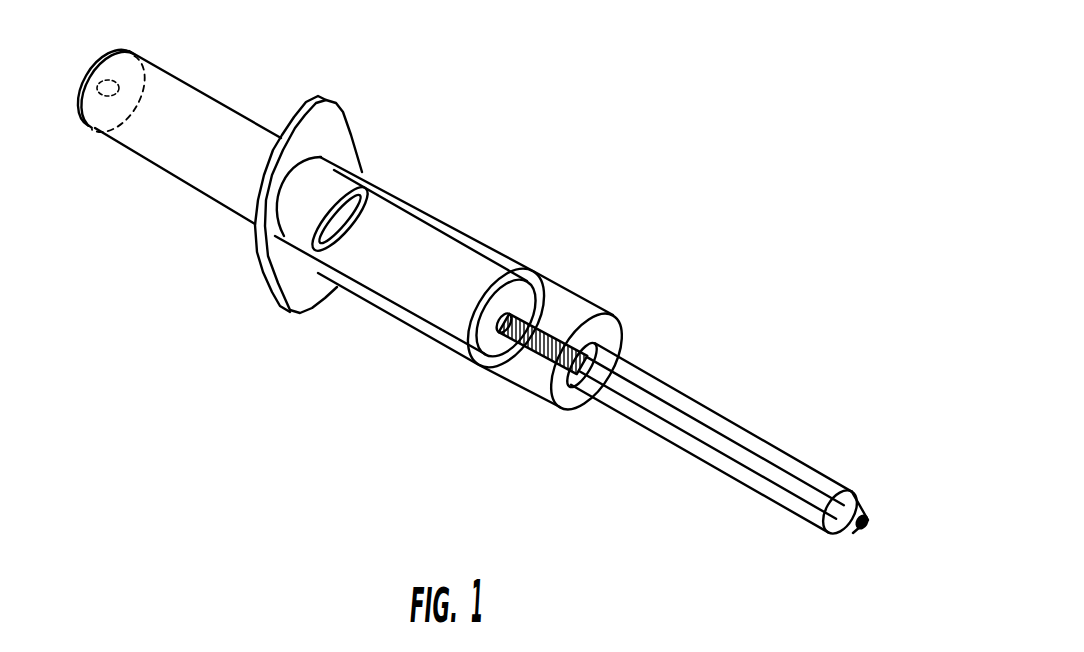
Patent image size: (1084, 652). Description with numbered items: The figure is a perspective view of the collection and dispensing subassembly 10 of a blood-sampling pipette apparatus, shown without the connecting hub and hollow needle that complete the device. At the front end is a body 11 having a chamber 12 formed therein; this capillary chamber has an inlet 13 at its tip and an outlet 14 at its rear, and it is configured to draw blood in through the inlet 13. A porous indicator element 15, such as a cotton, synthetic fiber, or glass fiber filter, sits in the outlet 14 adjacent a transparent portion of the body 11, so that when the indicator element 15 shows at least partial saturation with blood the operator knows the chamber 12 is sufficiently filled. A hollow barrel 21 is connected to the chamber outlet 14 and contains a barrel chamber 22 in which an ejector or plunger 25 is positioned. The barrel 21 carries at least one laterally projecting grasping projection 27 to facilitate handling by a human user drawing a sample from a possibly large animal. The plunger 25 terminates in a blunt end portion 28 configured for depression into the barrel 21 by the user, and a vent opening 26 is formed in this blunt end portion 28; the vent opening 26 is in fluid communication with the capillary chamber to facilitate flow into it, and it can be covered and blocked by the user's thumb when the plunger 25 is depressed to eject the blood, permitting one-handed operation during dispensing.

The collection and dispensing subassembly 10 is at (380, 377).
The body 11 is at (648, 378).
The chamber 12 is at (727, 444).
The inlet 13 is at (866, 514).
The outlet 14 is at (533, 292).
The porous indicator element 15 is at (598, 317).
The hollow barrel 21 is at (460, 226).
The barrel chamber 22 is at (388, 213).
The plunger 25 is at (194, 87).
The vent opening 26 is at (142, 60).
The grasping projection 27 is at (338, 124).
The blunt end portion 28 is at (84, 93).